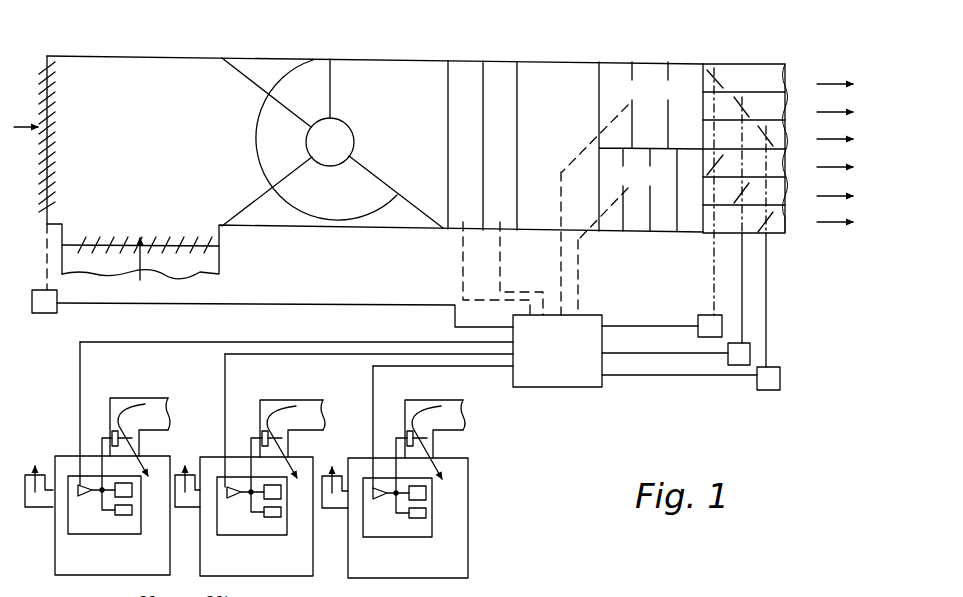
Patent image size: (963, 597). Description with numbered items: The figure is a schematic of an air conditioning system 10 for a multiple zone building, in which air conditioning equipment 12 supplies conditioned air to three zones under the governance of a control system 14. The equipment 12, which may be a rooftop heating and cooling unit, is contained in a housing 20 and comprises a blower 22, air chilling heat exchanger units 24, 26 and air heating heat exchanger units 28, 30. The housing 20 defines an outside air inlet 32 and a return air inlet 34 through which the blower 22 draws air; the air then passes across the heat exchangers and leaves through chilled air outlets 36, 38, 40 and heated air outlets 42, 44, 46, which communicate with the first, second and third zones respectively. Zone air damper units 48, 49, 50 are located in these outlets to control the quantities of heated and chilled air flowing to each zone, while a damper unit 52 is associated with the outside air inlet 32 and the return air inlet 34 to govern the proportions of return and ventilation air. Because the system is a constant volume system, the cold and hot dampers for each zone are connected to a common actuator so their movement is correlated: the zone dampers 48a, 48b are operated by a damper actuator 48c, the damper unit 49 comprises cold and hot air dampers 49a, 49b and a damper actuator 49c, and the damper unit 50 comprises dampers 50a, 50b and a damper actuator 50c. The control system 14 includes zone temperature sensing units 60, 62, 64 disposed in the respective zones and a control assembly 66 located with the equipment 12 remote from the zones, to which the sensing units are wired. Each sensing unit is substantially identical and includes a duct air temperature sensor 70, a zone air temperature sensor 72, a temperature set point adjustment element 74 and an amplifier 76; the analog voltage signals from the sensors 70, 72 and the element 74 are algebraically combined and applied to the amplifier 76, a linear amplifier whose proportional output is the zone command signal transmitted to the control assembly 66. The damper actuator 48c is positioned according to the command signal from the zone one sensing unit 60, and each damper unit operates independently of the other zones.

The air conditioning system 10 is at (121, 49).
The air conditioning equipment 12 is at (506, 57).
The control system 14 is at (609, 393).
The housing 20 is at (366, 230).
The blower 22 is at (250, 134).
The air chilling heat exchanger unit 24 is at (611, 108).
The air chilling heat exchanger unit 26 is at (511, 83).
The air heating heat exchanger unit 28 is at (610, 196).
The air heating heat exchanger unit 30 is at (448, 106).
The outside air inlet 32 is at (52, 134).
The return air inlet 34 is at (110, 246).
The chilled air outlet 36 is at (706, 77).
The chilled air outlet 38 is at (703, 116).
The chilled air outlet 40 is at (703, 137).
The heated air outlet 42 is at (704, 161).
The heated air outlet 44 is at (704, 197).
The heated air outlet 46 is at (704, 221).
The zone air damper unit 48 is at (708, 268).
The zone damper 48a is at (706, 72).
The zone damper 48b is at (722, 166).
The damper actuator 48c is at (698, 318).
The damper unit 49 is at (752, 326).
The cold air damper 49a is at (736, 97).
The hot air damper 49b is at (740, 210).
The damper actuator 49c is at (742, 366).
The damper unit 50 is at (769, 300).
The cold air damper 50a is at (766, 126).
The hot air damper 50b is at (765, 233).
The damper actuator 50c is at (780, 381).
The damper unit 52 is at (32, 300).
The zone temperature sensing unit 60 is at (69, 526).
The zone temperature sensing unit 62 is at (245, 415).
The zone temperature sensing unit 64 is at (392, 415).
The control assembly 66 is at (568, 362).
The duct air temperature sensor 70 is at (111, 438).
The zone air temperature sensor 72 is at (132, 490).
The temperature set point adjustment element 74 is at (118, 512).
The amplifier 76 is at (90, 488).